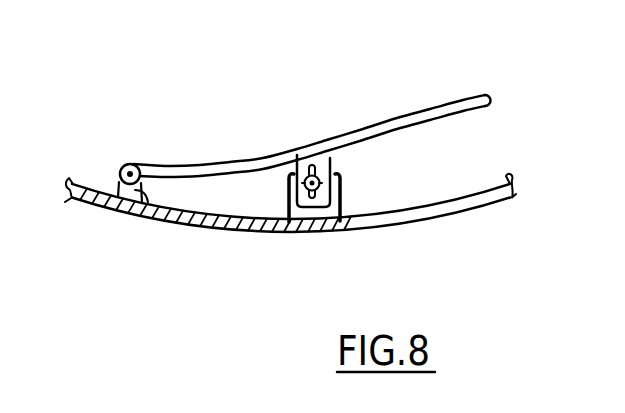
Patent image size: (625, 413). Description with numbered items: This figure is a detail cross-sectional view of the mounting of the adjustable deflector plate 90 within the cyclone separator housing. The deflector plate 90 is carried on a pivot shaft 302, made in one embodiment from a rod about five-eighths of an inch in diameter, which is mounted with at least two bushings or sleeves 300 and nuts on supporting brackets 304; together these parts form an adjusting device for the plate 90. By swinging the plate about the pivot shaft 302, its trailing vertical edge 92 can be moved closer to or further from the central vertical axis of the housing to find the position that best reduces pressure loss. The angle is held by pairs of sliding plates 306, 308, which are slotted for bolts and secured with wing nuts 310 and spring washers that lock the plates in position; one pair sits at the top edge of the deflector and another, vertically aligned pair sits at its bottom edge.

The deflector plate 90 is at (364, 129).
The trailing vertical edge 92 is at (492, 94).
The bushings or sleeves 300 is at (137, 163).
The pivot shaft 302 is at (122, 167).
The supporting brackets 304 is at (159, 220).
The sliding plate 306 is at (331, 165).
The sliding plate 308 is at (318, 213).
The wing nuts 310 is at (302, 180).